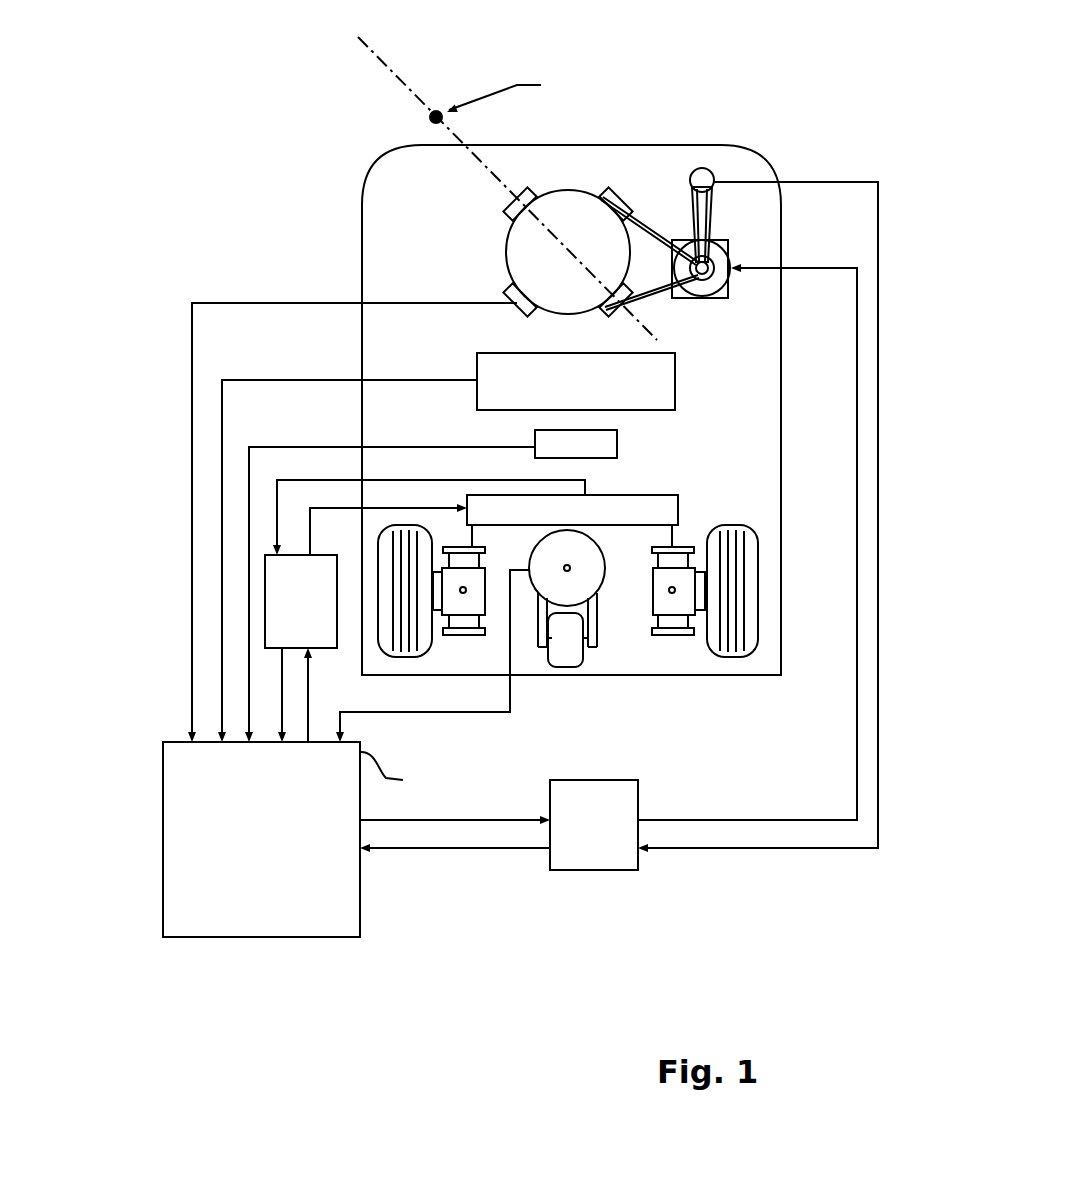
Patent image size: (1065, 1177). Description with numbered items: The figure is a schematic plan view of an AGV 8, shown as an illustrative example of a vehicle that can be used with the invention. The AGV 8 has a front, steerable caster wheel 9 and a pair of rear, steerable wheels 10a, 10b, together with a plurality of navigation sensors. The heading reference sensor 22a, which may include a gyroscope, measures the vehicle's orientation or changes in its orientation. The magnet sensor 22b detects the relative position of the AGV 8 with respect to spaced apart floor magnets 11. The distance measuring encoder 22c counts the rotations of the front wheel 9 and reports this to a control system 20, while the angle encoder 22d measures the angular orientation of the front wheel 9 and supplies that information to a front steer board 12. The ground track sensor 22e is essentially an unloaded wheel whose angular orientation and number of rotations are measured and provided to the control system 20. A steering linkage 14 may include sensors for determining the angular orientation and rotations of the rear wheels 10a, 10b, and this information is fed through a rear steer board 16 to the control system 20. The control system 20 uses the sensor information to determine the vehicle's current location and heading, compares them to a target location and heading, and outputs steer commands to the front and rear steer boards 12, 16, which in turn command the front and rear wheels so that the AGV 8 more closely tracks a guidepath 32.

The AGV 8 is at (762, 162).
The front steerable caster wheel 9 is at (523, 212).
The floor magnets 11 is at (442, 103).
The guidepath 32 is at (410, 96).
The heading reference sensor 22a is at (617, 447).
The magnet sensor 22b is at (675, 380).
The distance measuring encoder 22c is at (507, 290).
The angle encoder 22d is at (688, 181).
The ground track sensor 22e is at (598, 594).
The steering linkage 14 is at (678, 500).
The rear steerable wheel 10a is at (372, 536).
The rear steerable wheel 10b is at (745, 527).
The rear steer board 16 is at (335, 650).
The control system 20 is at (163, 890).
The front steer board 12 is at (600, 870).